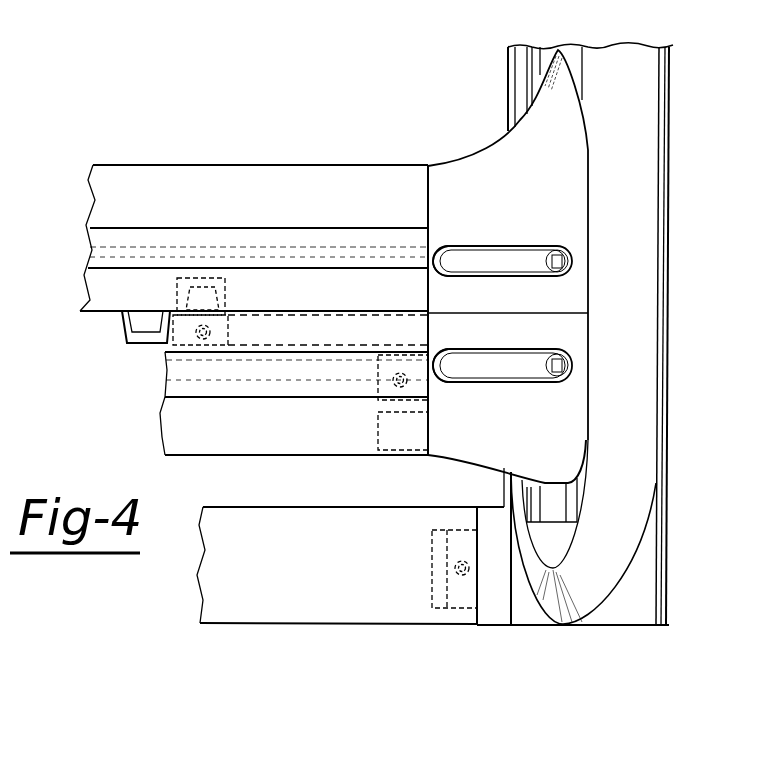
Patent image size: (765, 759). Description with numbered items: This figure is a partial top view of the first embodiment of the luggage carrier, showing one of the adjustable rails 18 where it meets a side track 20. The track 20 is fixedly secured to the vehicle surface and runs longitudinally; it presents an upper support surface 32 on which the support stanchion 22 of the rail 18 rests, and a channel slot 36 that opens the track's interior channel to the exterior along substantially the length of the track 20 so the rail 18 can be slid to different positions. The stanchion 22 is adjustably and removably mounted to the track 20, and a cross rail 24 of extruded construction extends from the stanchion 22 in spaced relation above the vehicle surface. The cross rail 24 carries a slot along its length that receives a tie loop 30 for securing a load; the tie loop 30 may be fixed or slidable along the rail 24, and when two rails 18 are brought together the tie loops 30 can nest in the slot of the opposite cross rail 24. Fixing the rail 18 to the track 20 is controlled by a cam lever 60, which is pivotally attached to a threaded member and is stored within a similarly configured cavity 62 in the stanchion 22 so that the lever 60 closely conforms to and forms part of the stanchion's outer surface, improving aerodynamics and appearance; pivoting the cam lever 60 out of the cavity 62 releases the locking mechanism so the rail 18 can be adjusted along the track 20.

The adjustable rail 18 is at (158, 378).
The side track 20 is at (672, 66).
The support stanchion 22 is at (577, 343).
The cross rail 24 is at (137, 187).
The tie loop 30 is at (228, 290).
The upper support surface 32 is at (567, 548).
The channel slot 36 is at (578, 505).
The cam lever 60 is at (500, 263).
The cavity 62 is at (442, 247).